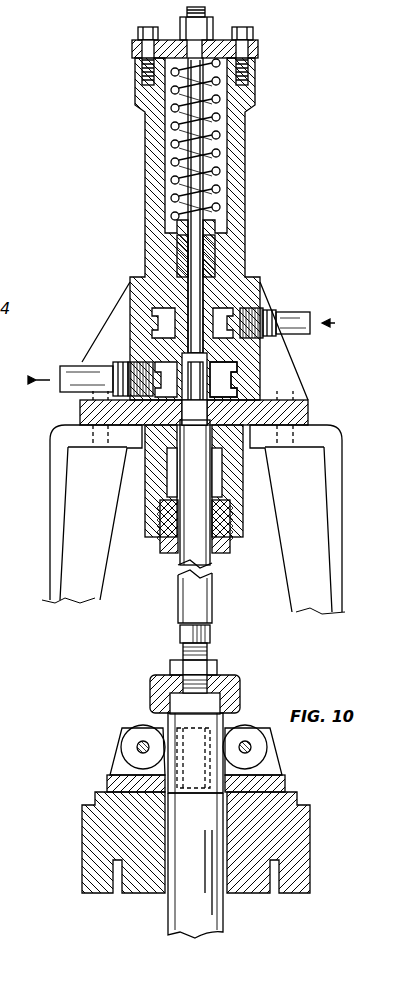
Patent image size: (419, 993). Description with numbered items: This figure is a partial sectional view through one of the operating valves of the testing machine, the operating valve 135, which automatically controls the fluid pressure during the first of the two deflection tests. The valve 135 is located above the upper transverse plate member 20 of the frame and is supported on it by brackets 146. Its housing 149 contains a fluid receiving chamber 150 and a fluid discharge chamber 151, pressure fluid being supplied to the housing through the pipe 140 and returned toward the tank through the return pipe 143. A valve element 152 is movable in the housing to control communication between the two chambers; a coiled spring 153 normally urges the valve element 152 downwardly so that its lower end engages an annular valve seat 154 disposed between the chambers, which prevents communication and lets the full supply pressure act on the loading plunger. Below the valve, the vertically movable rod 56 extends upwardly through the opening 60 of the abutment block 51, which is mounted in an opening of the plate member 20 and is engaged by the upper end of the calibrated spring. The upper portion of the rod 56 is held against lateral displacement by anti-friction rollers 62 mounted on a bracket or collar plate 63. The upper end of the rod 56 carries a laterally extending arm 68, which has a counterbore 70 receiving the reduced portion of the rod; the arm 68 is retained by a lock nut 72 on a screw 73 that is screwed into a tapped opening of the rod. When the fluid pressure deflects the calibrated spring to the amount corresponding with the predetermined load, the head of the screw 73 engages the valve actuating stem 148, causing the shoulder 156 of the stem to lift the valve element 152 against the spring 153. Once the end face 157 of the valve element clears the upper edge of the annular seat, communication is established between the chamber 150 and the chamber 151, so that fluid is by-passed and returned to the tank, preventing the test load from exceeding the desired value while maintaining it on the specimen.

The operating valve 135 is at (240, 195).
The housing 149 is at (237, 257).
The coiled spring 153 is at (220, 152).
The annular valve seat 154 is at (178, 350).
The fluid receiving chamber 150 is at (152, 318).
The valve element 152 is at (235, 342).
The shoulder 156 is at (171, 379).
The end face 157 is at (226, 379).
The fluid discharge chamber 151 is at (230, 388).
The pipe 140 is at (300, 312).
The return pipe 143 is at (62, 366).
The brackets 146 is at (335, 470).
The valve actuating stem 148 is at (186, 593).
The screw 73 is at (180, 635).
The lock nut 72 is at (212, 664).
The laterally extending arm 68 is at (240, 692).
The counterbore 70 is at (182, 702).
The opening 60 is at (163, 878).
The rod 56 is at (210, 832).
The anti-friction rollers 62 is at (138, 733).
The bracket or collar plate 63 is at (122, 766).
The abutment block 51 is at (107, 800).
The transverse plate member 20 is at (85, 832).